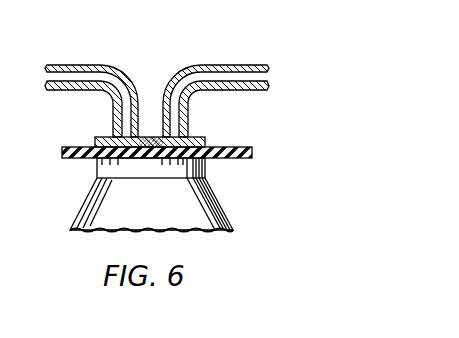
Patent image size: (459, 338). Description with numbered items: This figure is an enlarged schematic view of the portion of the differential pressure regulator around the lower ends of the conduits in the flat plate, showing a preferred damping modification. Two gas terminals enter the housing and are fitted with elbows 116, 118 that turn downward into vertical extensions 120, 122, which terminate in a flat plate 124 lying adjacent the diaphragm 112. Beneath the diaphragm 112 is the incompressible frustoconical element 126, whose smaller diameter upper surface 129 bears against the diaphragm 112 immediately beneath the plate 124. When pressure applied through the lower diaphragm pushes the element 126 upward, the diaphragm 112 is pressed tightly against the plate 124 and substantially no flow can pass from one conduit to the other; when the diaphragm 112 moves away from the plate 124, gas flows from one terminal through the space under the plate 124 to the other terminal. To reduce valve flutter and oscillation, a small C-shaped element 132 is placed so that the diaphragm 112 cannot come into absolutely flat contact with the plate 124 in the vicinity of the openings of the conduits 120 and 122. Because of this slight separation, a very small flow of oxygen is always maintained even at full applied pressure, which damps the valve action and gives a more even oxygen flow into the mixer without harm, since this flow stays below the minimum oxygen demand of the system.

The diaphragm 112 is at (228, 153).
The elbow 116 is at (76, 64).
The elbow 118 is at (198, 63).
The vertical extension 120 is at (113, 115).
The vertical extension 122 is at (186, 96).
The flat plate 124 is at (194, 139).
The frustoconical element 126 is at (222, 210).
The upper surface 129 is at (97, 172).
The C-shaped element 132 is at (148, 147).